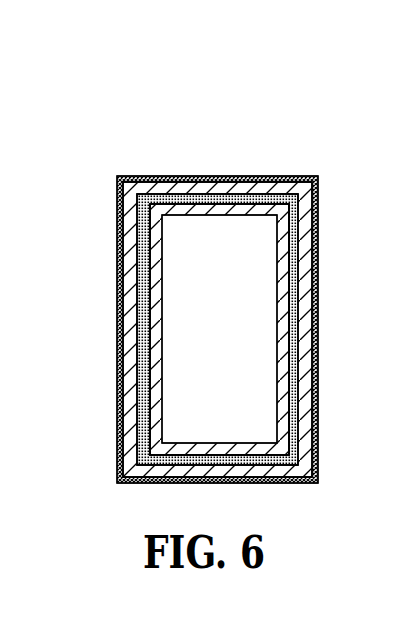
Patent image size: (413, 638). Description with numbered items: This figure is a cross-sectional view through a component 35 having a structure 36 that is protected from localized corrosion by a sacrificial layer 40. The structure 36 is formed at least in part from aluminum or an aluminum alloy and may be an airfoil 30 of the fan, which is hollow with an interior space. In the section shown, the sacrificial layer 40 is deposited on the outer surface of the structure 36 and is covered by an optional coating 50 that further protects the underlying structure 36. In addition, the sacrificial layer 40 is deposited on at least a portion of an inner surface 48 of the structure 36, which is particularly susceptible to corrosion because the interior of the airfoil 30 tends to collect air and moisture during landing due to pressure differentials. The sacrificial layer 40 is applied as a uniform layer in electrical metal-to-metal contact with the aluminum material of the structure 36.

The component 35 is at (136, 147).
The sacrificial layer 40 is at (253, 188).
The coating 50 is at (312, 214).
The airfoil 30 is at (296, 305).
The structure 36 is at (292, 392).
The inner surface 48 is at (157, 382).